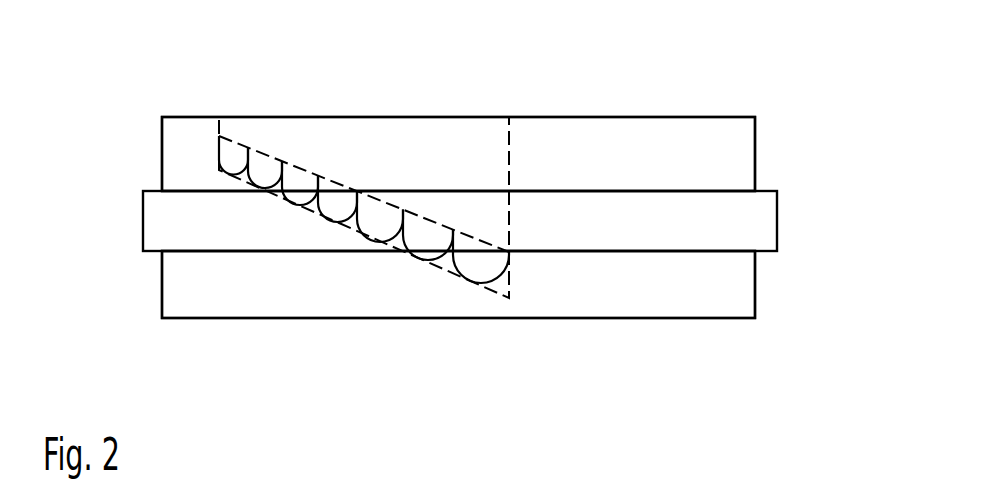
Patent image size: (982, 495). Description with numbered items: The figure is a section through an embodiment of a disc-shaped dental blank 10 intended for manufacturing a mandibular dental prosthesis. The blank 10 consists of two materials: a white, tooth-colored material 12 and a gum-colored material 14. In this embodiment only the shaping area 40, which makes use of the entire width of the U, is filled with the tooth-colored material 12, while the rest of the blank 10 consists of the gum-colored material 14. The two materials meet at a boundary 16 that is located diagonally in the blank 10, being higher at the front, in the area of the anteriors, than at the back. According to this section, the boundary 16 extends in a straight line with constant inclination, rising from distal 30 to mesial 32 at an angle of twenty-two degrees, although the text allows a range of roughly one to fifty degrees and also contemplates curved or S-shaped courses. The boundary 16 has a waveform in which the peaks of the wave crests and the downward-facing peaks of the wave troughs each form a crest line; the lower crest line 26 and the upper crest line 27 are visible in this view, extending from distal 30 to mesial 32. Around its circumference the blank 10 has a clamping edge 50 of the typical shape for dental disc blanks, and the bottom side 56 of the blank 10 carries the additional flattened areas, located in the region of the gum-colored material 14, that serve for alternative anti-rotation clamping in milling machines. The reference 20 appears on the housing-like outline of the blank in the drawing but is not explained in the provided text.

The blank 10 is at (410, 392).
The tooth-colored material 12 is at (458, 133).
The gum-colored material 14 is at (573, 305).
The boundary 16 is at (268, 162).
The housing 20 is at (657, 117).
The lower crest line 26 is at (364, 221).
The upper crest line 27 is at (300, 160).
The distal 30 is at (475, 268).
The mesial 32 is at (233, 163).
The shaping area 40 is at (394, 82).
The clamping edge 50 is at (765, 222).
The bottom side 56 is at (662, 330).